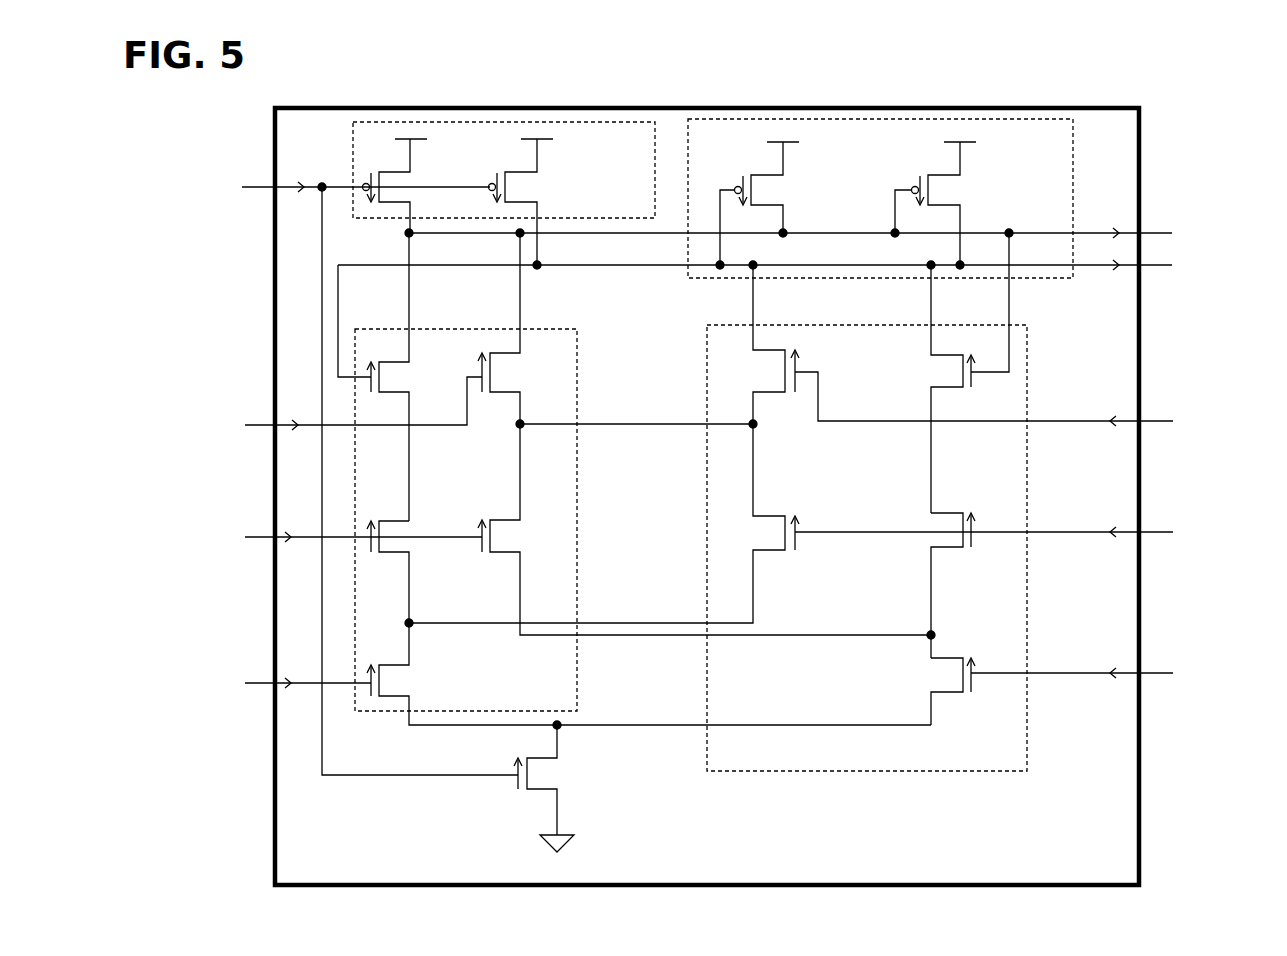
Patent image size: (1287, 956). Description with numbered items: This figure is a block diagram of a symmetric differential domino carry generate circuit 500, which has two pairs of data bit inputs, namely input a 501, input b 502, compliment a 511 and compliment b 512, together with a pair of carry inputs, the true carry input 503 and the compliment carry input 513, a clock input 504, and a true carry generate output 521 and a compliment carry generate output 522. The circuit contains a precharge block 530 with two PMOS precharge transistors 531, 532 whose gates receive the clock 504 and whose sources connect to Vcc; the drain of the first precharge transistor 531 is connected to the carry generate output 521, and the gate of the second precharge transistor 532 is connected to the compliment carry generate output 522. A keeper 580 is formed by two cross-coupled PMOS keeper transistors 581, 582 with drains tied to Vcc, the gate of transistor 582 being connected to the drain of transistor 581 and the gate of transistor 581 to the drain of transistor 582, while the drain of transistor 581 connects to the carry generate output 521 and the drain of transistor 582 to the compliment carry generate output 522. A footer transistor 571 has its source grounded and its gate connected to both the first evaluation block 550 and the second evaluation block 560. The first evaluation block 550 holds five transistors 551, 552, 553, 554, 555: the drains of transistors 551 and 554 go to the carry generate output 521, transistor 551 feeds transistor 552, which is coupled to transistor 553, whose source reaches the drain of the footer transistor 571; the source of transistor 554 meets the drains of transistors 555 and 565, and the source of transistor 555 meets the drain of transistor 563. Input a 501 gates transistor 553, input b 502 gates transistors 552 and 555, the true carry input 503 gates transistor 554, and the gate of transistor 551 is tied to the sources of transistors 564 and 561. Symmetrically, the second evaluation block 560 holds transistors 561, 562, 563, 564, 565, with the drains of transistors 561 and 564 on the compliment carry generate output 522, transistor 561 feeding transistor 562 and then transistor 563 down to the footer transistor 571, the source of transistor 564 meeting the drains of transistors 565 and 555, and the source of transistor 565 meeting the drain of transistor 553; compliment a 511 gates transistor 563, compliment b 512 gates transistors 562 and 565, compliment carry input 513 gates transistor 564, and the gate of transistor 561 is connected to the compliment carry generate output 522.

The carry generate circuit 500 is at (707, 496).
The input a 501 is at (304, 673).
The input b 502 is at (354, 528).
The true carry input 503 is at (328, 408).
The clock input 504 is at (377, 458).
The compliment a input 511 is at (1198, 656).
The compliment b input 512 is at (1197, 506).
The compliment carry input 513 is at (1173, 402).
The true carry generate output 521 is at (830, 283).
The compliment carry generate output 522 is at (1153, 267).
The precharge block 530 is at (560, 122).
The first precharge transistor 531 is at (405, 186).
The second precharge transistor 532 is at (534, 202).
The first evaluation block 550 is at (578, 535).
The transistor 551 is at (404, 377).
The transistor 552 is at (390, 557).
The transistor 553 is at (649, 676).
The transistor 554 is at (615, 330).
The transistor 555 is at (704, 529).
The second evaluation block 560 is at (772, 773).
The transistor 561 is at (937, 389).
The transistor 562 is at (951, 569).
The transistor 563 is at (932, 690).
The transistor 564 is at (766, 346).
The transistor 565 is at (604, 523).
The footer transistor 571 is at (558, 788).
The keeper 580 is at (823, 120).
The keeper transistor 581 is at (770, 203).
The keeper transistor 582 is at (946, 203).